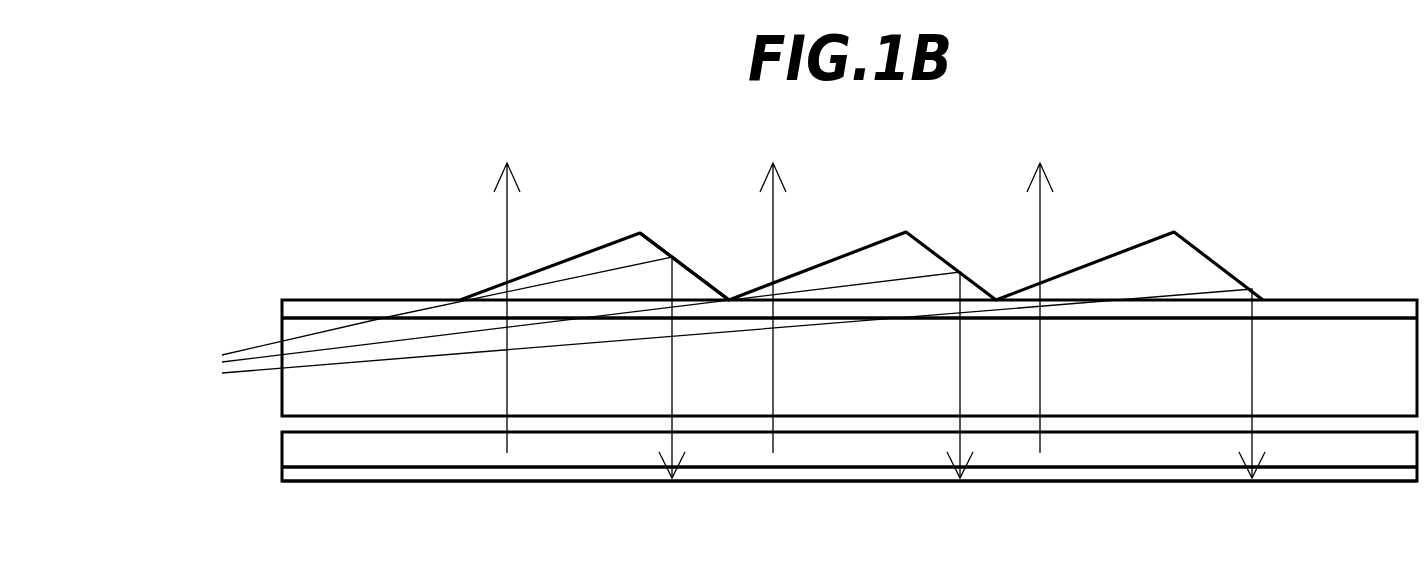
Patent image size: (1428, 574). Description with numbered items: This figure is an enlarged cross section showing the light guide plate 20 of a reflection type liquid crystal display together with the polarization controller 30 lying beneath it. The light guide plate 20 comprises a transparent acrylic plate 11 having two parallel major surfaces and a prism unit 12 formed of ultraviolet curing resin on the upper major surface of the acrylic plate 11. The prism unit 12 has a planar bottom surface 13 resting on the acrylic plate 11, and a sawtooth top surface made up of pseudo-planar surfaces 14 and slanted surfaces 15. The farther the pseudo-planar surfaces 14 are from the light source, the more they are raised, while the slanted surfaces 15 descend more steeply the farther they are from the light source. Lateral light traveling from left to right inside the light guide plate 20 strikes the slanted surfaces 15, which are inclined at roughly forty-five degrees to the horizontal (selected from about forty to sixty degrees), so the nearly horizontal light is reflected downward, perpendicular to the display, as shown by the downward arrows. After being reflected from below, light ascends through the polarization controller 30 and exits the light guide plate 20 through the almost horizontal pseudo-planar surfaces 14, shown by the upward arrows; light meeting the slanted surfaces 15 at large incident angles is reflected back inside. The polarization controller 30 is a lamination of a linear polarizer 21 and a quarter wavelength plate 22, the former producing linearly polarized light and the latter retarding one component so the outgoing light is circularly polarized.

The light guide plate 20 is at (208, 157).
The acrylic plate 11 is at (293, 330).
The prism unit 12 is at (307, 312).
The planar bottom surface 13 is at (343, 318).
The pseudo-planar surfaces 14 is at (488, 287).
The slanted surfaces 15 is at (657, 243).
The polarization controller 30 is at (170, 392).
The linear polarizer 21 is at (300, 450).
The quarter wavelength plate 22 is at (300, 474).